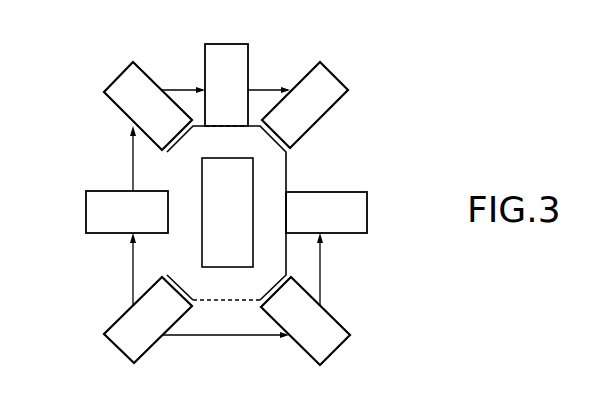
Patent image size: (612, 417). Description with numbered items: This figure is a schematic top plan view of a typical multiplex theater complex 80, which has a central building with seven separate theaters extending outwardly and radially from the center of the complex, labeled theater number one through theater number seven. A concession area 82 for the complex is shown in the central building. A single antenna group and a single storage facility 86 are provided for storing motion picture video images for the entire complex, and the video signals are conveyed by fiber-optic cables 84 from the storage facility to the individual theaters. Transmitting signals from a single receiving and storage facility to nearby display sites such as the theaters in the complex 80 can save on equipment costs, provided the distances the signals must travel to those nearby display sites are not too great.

The multiplex theater complex 80 is at (360, 251).
The concession area 82 is at (243, 178).
The fiber-optic cables 84 is at (180, 88).
The storage facility 86 is at (138, 263).